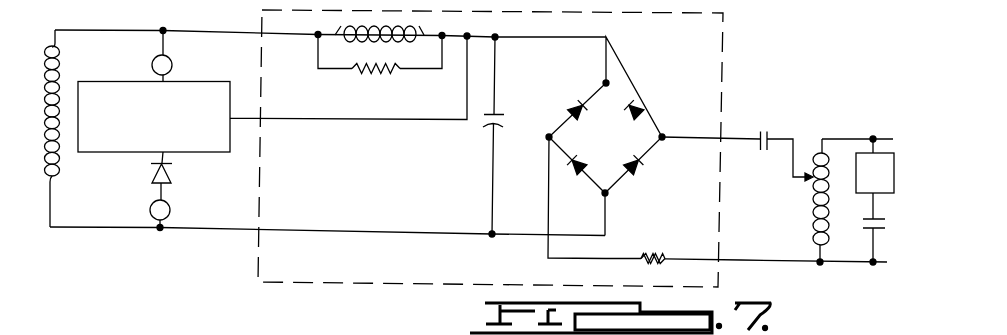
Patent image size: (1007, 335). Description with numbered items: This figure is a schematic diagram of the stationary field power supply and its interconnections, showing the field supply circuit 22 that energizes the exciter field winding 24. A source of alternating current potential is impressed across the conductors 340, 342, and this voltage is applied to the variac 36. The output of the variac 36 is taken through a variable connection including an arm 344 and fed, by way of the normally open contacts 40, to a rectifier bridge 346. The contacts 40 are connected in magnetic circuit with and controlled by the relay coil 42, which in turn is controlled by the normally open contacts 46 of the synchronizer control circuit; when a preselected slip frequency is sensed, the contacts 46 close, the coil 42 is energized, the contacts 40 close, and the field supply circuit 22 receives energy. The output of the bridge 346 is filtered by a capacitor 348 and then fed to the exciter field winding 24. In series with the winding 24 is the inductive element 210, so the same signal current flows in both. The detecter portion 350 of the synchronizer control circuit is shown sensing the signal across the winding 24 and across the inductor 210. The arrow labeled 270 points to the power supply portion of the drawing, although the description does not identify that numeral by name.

The exciter field winding 24 is at (62, 60).
The detecter portion 350 is at (204, 142).
The field supply circuit 22 is at (367, 285).
The inductive element 210 is at (350, 32).
The capacitor 348 is at (485, 118).
The rectifier bridge 346 is at (631, 147).
The power supply circuit 270 is at (679, 97).
The conductor 340 is at (892, 263).
The normally open contacts 40 is at (770, 122).
The arm 344 is at (807, 178).
The variac circuit 36 is at (812, 210).
The conductor 342 is at (853, 134).
The relay coil 42 is at (888, 187).
The normally open contacts 46 is at (863, 223).